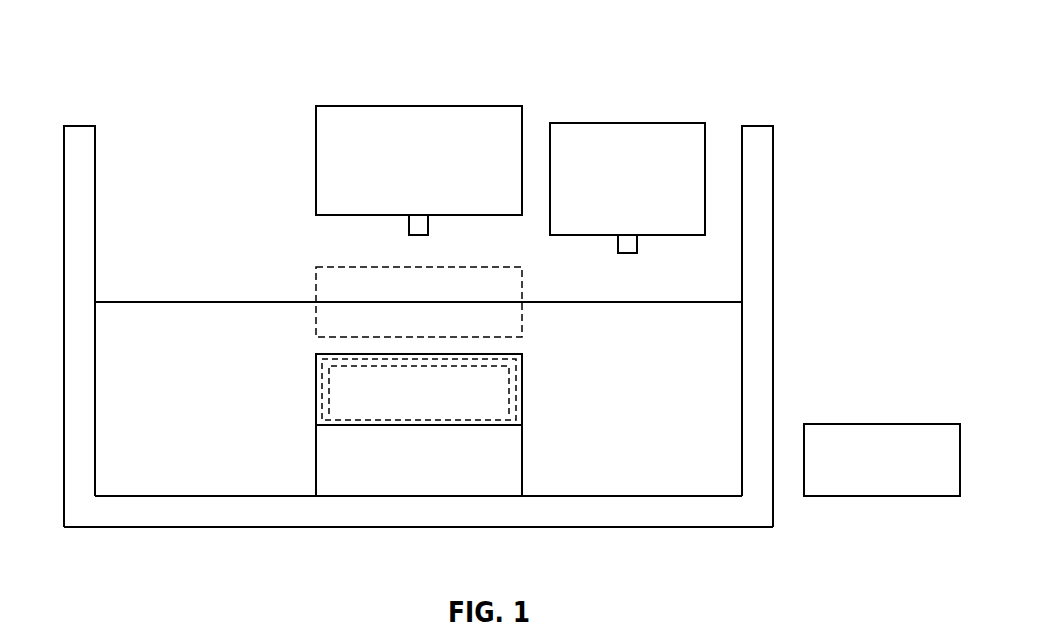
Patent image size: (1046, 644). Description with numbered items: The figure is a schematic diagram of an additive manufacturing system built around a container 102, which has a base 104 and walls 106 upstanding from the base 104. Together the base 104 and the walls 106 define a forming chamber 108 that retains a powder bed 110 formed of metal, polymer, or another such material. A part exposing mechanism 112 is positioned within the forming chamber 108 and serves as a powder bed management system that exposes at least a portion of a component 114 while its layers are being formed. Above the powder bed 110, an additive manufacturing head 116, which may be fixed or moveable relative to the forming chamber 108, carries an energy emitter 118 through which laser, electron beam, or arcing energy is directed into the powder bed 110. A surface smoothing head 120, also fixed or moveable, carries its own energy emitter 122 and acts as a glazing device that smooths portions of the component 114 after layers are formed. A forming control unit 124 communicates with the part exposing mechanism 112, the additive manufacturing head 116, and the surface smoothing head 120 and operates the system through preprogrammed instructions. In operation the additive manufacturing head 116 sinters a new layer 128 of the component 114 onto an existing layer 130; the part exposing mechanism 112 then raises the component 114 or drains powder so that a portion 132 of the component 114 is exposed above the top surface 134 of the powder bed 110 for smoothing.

The container 102 is at (783, 158).
The base 104 is at (628, 527).
The walls 106 is at (775, 327).
The forming chamber 108 is at (216, 128).
The powder bed 110 is at (218, 302).
The part exposing mechanism 112 is at (315, 462).
The component 114 is at (522, 383).
The additive manufacturing head 116 is at (418, 105).
The energy emitter 118 is at (431, 224).
The surface smoothing head 120 is at (627, 123).
The energy emitter 122 is at (640, 242).
The forming control unit 124 is at (882, 424).
The layer 128 is at (315, 390).
The existing layer 130 is at (512, 404).
The portion 132 is at (362, 264).
The top surface 134 is at (568, 302).